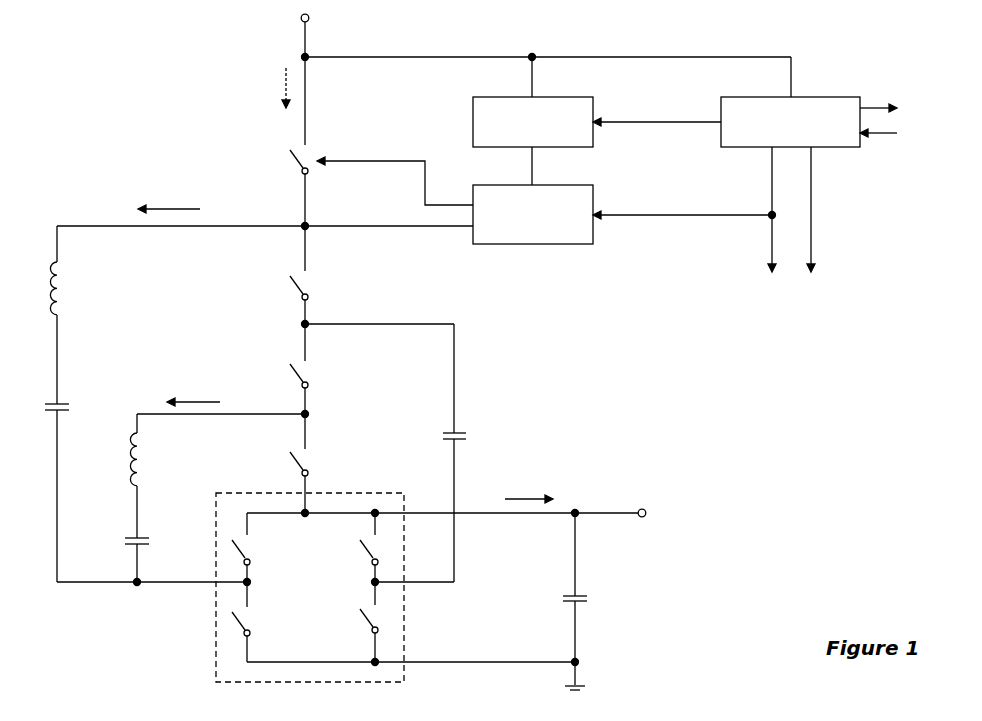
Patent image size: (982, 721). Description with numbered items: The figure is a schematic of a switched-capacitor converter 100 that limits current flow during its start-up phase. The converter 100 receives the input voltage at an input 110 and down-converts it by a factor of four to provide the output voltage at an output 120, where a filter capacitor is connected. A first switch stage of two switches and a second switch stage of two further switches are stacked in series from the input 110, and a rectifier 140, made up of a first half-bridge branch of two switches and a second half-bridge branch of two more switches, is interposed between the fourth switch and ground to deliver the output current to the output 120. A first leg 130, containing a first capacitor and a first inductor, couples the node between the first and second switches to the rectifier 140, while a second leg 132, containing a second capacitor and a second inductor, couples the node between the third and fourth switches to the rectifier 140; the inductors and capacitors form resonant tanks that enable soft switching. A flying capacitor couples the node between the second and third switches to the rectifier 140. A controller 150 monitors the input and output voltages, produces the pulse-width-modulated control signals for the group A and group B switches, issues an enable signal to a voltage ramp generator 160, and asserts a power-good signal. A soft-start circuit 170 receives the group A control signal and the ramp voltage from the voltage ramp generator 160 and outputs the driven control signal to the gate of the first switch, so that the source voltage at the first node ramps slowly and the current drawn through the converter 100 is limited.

The switched-capacitor converter 100 is at (34, 34).
The input 110 is at (304, 78).
The output 120 is at (639, 501).
The first leg 130 is at (57, 618).
The second leg 132 is at (137, 618).
The rectifier 140 is at (395, 578).
The controller 150 is at (790, 112).
The voltage ramp generator 160 is at (533, 112).
The soft-start circuit 170 is at (533, 205).